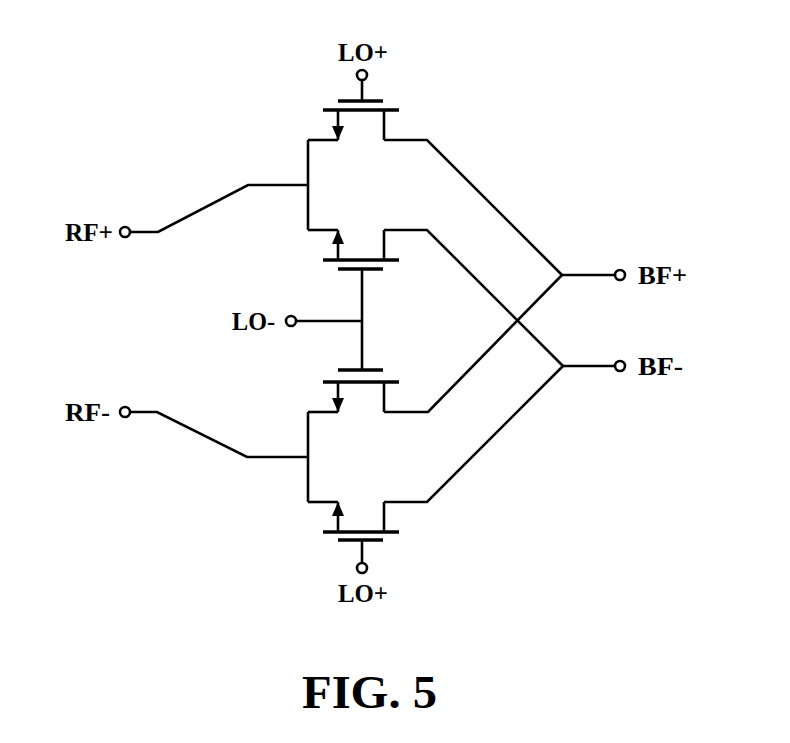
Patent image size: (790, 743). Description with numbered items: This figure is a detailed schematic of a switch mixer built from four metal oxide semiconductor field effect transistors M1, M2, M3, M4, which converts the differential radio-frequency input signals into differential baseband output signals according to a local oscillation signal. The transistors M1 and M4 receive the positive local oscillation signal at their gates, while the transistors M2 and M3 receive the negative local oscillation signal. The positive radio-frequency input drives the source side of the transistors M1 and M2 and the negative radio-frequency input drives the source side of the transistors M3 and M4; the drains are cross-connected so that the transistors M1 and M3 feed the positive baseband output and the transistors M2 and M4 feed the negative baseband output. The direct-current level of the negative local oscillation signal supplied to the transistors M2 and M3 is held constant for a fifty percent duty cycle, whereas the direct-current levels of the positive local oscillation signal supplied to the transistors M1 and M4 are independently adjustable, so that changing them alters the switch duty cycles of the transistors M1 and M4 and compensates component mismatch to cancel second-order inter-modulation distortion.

The transistor M1 is at (435, 188).
The transistor M2 is at (435, 285).
The transistor M3 is at (435, 357).
The transistor M4 is at (435, 453).